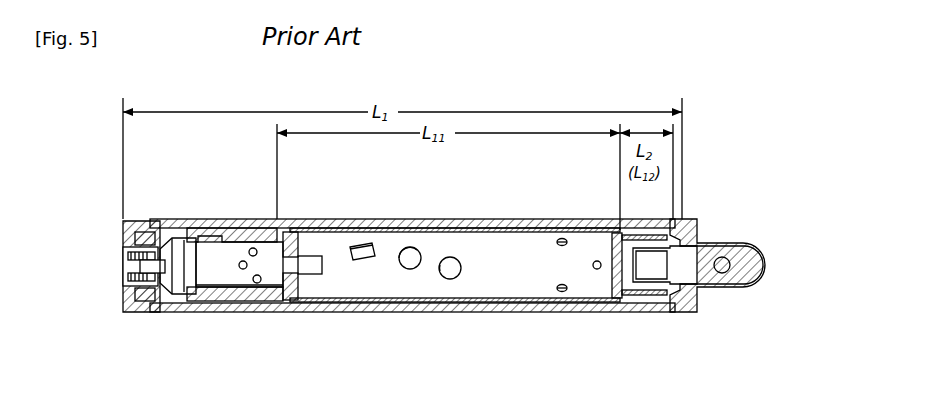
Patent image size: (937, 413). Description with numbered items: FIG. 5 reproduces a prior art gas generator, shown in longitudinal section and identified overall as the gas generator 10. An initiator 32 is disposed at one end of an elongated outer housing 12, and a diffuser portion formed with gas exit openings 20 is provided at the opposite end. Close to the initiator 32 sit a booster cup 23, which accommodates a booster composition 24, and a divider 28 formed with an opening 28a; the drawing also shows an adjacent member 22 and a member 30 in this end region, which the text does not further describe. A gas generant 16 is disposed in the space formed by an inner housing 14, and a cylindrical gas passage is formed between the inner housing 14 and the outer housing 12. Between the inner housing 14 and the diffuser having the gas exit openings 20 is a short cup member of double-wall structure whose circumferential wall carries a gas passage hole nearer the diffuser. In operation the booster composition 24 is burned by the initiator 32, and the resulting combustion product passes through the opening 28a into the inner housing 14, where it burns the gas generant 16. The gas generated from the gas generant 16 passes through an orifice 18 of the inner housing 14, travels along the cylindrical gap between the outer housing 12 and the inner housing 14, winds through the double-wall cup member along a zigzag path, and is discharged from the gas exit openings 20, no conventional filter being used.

The damper assembly 10 is at (534, 363).
The outer housing 12 is at (405, 228).
The inner housing 14 is at (341, 219).
The gas generant 16 is at (410, 268).
The orifice 18 is at (562, 237).
The gas exit openings 20 is at (725, 240).
The piston block 22 is at (252, 236).
The booster cup 23 is at (212, 301).
The booster composition 24 is at (262, 288).
The divider 28 is at (302, 232).
The opening 28a is at (322, 262).
The plug 30 is at (205, 232).
The initiator 32 is at (142, 228).